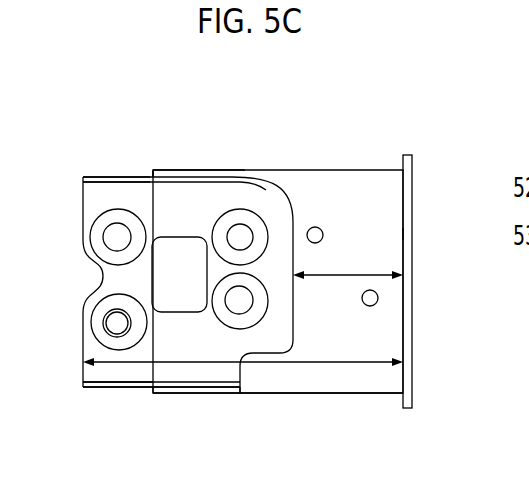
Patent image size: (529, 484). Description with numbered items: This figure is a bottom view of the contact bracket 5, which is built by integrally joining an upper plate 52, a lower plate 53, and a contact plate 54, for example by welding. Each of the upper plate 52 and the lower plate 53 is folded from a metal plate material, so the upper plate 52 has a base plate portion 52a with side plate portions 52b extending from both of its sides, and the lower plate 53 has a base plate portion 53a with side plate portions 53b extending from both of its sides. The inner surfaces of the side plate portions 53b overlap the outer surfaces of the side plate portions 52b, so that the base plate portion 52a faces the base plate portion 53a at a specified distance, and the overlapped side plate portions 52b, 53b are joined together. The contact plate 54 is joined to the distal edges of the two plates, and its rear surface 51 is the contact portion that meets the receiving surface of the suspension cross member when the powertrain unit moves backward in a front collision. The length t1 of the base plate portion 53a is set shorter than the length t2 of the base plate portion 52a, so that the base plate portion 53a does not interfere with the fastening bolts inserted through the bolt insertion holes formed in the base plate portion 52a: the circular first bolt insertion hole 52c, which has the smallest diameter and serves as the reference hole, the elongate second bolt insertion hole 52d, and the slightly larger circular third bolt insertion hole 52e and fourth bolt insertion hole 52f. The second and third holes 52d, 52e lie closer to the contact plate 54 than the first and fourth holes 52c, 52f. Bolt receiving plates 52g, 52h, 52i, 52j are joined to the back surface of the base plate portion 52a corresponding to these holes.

The contact bracket 5 is at (105, 83).
The rear surface of the contact plate 51 is at (412, 346).
The upper plate 52 is at (144, 168).
The base plate portion of the upper plate 52a is at (173, 394).
The side plate portions of the upper plate 52b is at (100, 176).
The first bolt insertion hole 52c is at (105, 330).
The second bolt insertion hole 52d is at (236, 240).
The third bolt insertion hole 52e is at (232, 302).
The fourth bolt insertion hole 52f is at (127, 237).
The bolt receiving plate 52g is at (103, 297).
The bolt receiving plate 52h is at (240, 233).
The bolt receiving plate 52i is at (233, 320).
The bolt receiving plate 52j is at (113, 217).
The lower plate 53 is at (320, 165).
The base plate portion of the lower plate 53a is at (349, 394).
The side plate portions of the lower plate 53b is at (213, 170).
The contact plate 54 is at (410, 233).
The length of the base plate portion of the lower plate t1 is at (348, 264).
The length of the base plate portion of the upper plate t2 is at (243, 350).